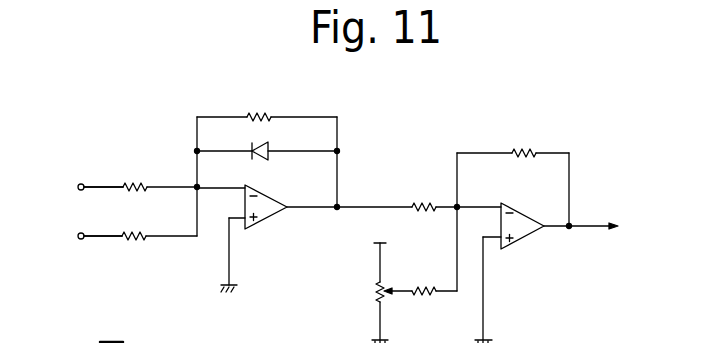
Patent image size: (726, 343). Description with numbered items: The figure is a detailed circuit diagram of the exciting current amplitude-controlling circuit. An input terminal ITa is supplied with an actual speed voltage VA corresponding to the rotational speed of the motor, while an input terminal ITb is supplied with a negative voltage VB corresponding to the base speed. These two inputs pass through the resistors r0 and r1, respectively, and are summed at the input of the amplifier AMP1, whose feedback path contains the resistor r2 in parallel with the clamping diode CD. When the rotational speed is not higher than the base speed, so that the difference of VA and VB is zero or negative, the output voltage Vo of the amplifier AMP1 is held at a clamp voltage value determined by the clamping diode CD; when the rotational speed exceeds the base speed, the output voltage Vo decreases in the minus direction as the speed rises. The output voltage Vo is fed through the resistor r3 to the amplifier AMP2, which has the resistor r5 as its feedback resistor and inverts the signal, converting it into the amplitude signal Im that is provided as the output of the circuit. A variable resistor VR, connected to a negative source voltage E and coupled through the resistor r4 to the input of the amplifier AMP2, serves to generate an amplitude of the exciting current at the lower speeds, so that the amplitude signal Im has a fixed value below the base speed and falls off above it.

The actual speed voltage VA is at (81, 188).
The base speed voltage VB is at (73, 239).
The input terminal ITa is at (99, 175).
The input terminal ITb is at (99, 224).
The resistor r0 is at (160, 176).
The resistor r1 is at (159, 225).
The resistor r2 is at (267, 106).
The clamping diode CD is at (273, 132).
The amplifier AMP1 is at (262, 218).
The output voltage Vo is at (338, 205).
The resistor r3 is at (456, 195).
The resistor r4 is at (420, 280).
The resistor r5 is at (513, 179).
The variable resistor VR is at (364, 293).
The voltage source E is at (364, 246).
The amplifier AMP2 is at (522, 237).
The amplitude signal Im is at (609, 224).